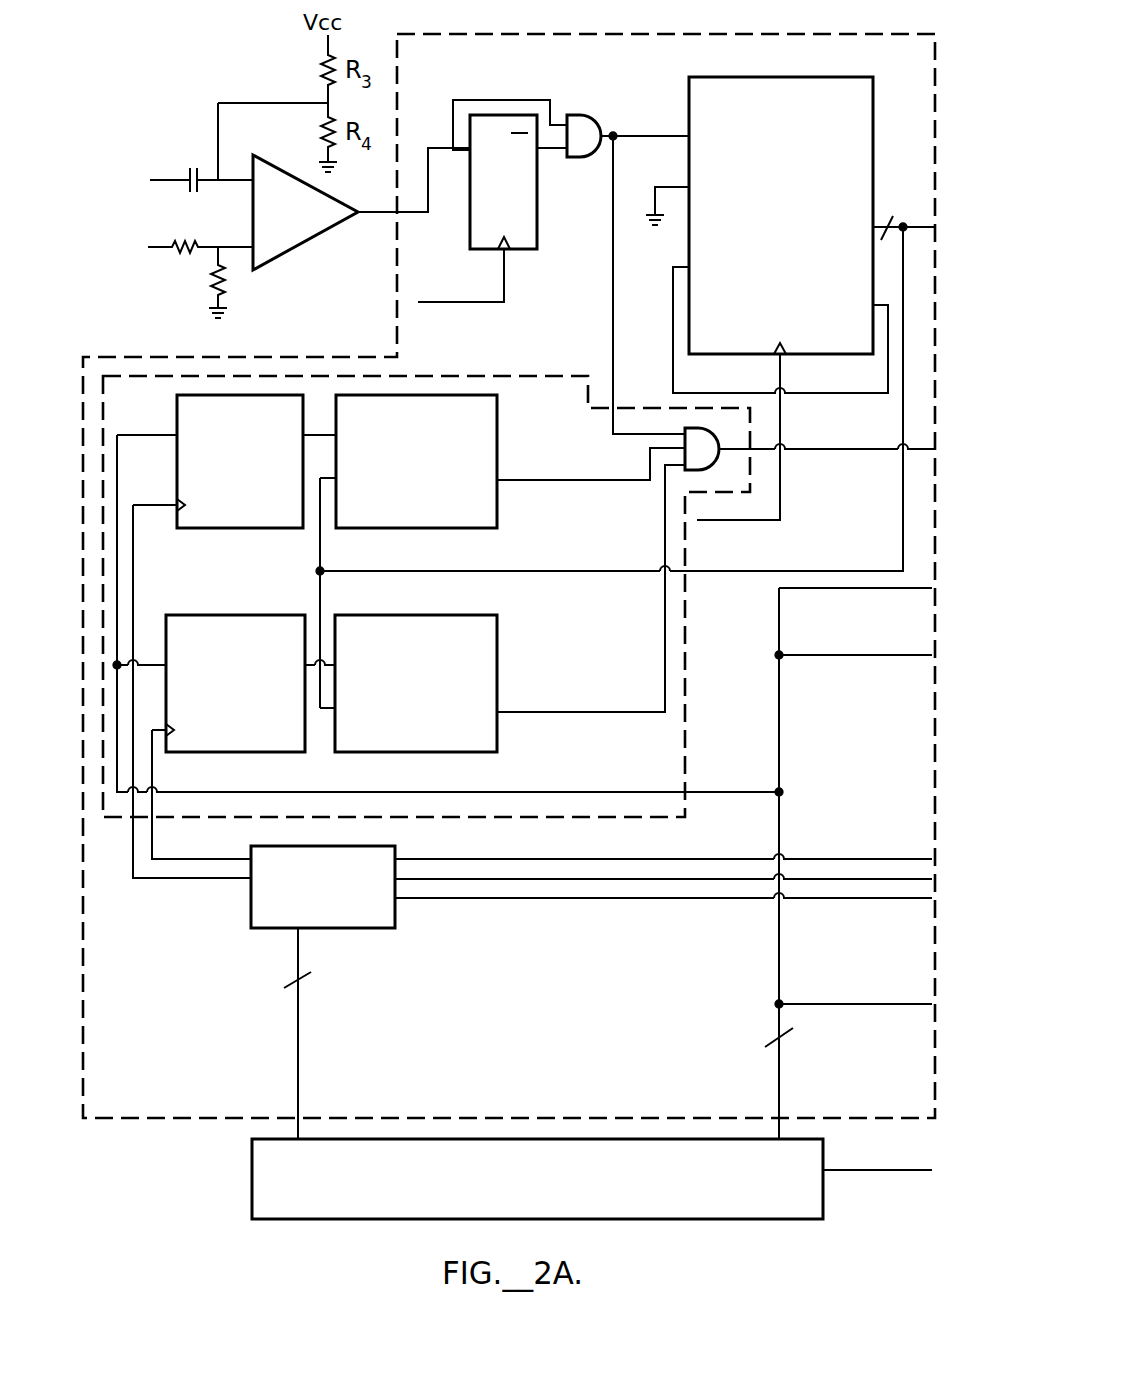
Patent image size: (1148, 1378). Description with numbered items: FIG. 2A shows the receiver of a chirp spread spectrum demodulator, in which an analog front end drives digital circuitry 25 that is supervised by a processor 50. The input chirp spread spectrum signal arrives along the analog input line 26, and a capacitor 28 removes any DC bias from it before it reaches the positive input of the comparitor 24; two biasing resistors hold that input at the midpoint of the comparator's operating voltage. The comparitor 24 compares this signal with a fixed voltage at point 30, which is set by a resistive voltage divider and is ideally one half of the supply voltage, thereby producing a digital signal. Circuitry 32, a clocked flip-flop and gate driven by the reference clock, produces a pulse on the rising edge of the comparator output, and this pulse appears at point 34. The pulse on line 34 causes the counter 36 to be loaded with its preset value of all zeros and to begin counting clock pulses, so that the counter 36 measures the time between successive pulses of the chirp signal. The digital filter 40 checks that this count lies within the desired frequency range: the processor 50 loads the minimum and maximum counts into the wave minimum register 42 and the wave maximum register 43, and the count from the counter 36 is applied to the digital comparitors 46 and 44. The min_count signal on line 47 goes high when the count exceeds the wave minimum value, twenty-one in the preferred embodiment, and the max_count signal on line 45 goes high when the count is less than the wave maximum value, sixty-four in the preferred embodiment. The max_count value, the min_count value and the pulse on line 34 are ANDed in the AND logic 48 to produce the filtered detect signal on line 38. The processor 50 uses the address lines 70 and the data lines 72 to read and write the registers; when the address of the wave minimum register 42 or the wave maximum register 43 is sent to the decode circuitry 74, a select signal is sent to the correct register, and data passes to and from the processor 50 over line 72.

The comparitor 24 is at (297, 237).
The digital circuitry 25 is at (194, 1118).
The analog input line 26 is at (167, 178).
The capacitor 28 is at (196, 170).
The point 30 is at (235, 248).
The circuitry 32 is at (600, 97).
The point/line 34 is at (613, 130).
The counter 36 is at (860, 151).
The line 38 is at (835, 450).
The digital filter 40 is at (679, 742).
The wave minimum register 42 is at (250, 522).
The wave maximum register 43 is at (235, 755).
The digital comparitor 44 is at (492, 628).
The line 45 is at (664, 612).
The digital comparitor 46 is at (487, 412).
The line 47 is at (586, 487).
The AND logic 48 is at (692, 438).
The processor 50 is at (815, 1195).
The address lines 70 is at (298, 965).
The data lines 72 is at (777, 944).
The decode circuitry 74 is at (378, 920).